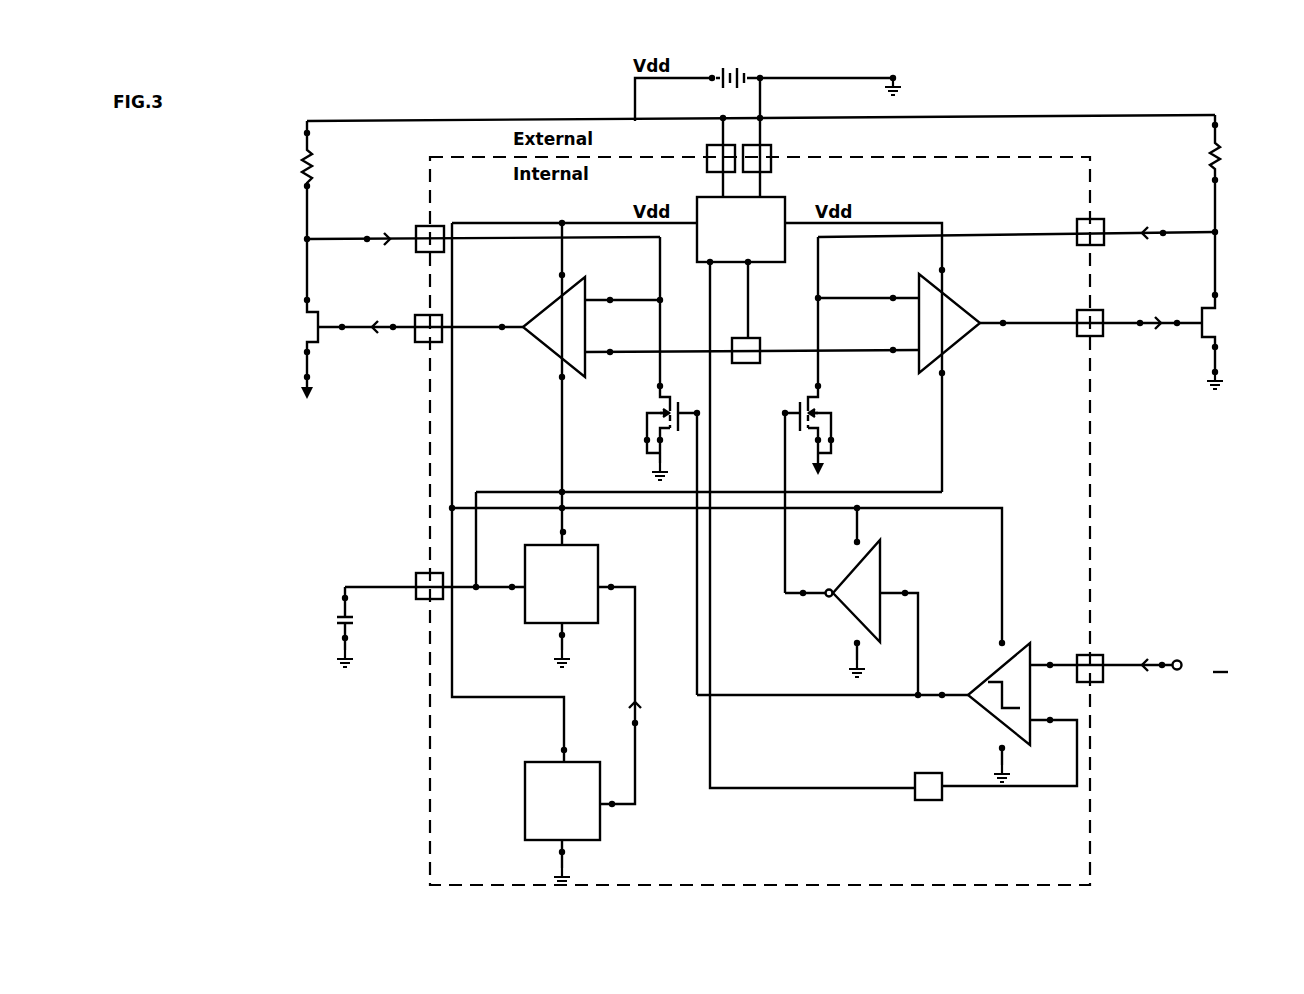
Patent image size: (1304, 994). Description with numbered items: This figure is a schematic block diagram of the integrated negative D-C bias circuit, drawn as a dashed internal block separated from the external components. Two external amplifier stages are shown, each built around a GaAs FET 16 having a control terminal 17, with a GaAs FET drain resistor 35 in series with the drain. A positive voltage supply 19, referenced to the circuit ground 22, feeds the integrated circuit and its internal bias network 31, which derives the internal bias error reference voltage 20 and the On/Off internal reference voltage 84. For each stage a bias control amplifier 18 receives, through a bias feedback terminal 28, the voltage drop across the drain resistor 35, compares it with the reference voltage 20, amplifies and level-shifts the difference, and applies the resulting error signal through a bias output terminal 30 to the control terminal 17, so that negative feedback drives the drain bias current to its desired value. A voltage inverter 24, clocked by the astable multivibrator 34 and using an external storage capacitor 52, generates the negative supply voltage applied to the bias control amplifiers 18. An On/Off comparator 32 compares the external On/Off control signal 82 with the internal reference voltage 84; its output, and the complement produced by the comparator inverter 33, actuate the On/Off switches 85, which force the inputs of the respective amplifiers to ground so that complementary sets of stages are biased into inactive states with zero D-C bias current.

The Gallium Arsenide Field Effect Transistor 16 is at (756, 315).
The control terminal 17 is at (760, 310).
The bias control amplifier 18 is at (748, 316).
The positive voltage supply 19 is at (745, 78).
The internal bias error reference voltage 20 is at (766, 338).
The circuit ground 22 is at (854, 82).
The voltage inverter 24 is at (583, 663).
The bias feedback terminal 28 is at (761, 224).
The bias output terminal 30 is at (743, 341).
The internal bias network 31 is at (741, 171).
The On/Off comparator 32 is at (884, 695).
The comparator inverter 33 is at (866, 603).
The astable multivibrator 34 is at (595, 804).
The GaAs FET drain resistor 35 is at (759, 177).
The external storage capacitor 52 is at (410, 620).
The external On/Off control signal 82 is at (1129, 658).
The On/Off internal reference voltage 84 is at (996, 778).
The On/Off switch 85 is at (756, 539).